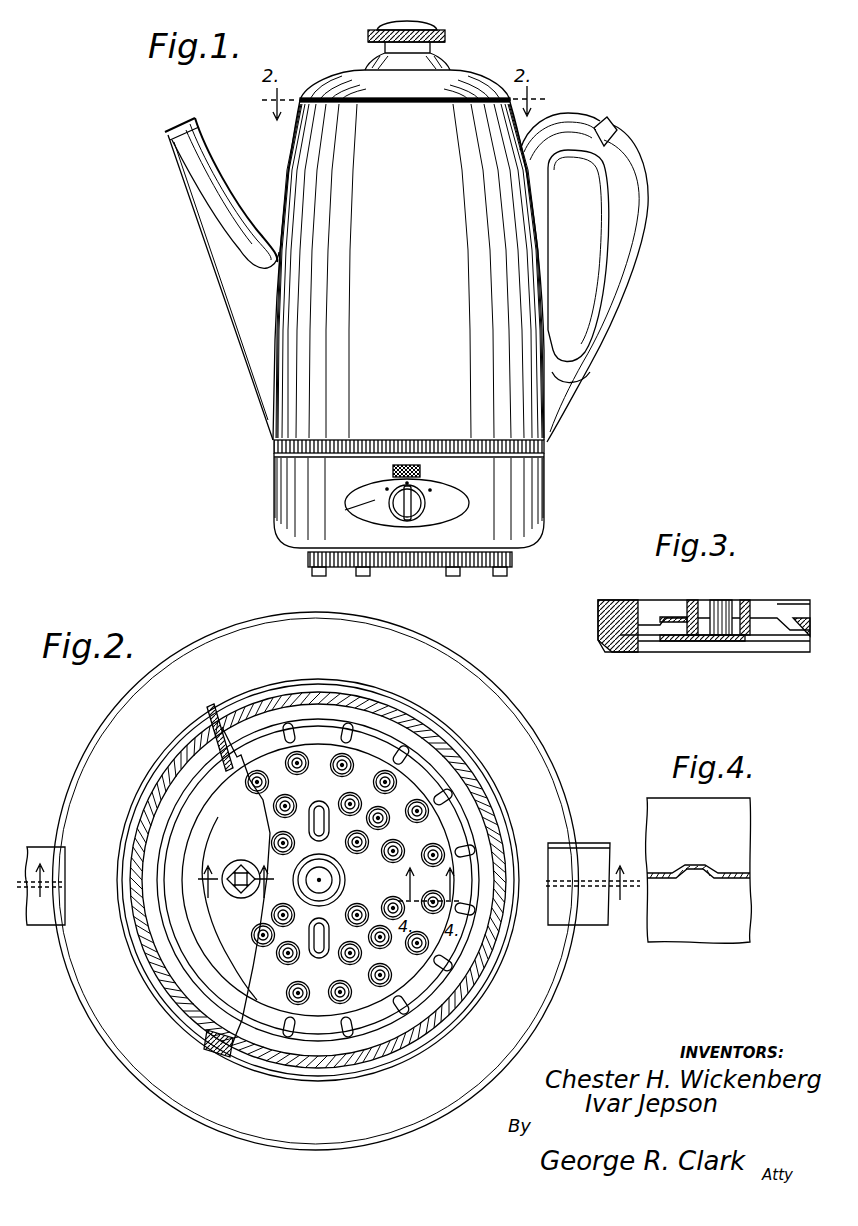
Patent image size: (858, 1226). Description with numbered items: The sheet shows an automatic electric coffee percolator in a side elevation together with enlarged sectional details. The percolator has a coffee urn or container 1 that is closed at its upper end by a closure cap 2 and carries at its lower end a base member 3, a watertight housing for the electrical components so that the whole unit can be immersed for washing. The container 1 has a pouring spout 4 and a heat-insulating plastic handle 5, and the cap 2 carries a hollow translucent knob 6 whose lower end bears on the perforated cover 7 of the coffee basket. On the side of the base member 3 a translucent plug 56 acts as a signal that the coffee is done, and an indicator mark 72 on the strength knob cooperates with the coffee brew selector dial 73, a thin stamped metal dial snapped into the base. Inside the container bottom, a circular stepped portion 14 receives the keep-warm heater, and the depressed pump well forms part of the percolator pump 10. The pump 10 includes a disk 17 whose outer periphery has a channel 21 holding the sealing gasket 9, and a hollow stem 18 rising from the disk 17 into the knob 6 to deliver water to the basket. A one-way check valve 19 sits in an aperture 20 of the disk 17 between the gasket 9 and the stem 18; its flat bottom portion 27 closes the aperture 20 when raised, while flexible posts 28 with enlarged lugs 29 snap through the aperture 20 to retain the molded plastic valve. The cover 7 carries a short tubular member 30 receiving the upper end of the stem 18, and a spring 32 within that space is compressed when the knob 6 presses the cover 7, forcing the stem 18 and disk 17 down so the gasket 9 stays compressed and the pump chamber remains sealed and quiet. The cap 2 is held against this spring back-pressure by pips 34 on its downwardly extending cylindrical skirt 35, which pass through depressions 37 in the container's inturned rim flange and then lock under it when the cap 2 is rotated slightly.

In FIG. 1, the container 1 is at (426, 224).
In FIG. 2, the container 1 is at (140, 1058).
In FIG. 1, the closure cap 2 is at (337, 82).
In FIG. 1, the base member 3 is at (290, 491).
In FIG. 2, the base member 3 is at (236, 892).
In FIG. 1, the pouring spout 4 is at (228, 246).
In FIG. 2, the pouring spout 4 is at (41, 872).
In FIG. 1, the handle 5 is at (630, 185).
In FIG. 2, the handle 5 is at (601, 843).
In FIG. 1, the knob 6 is at (440, 31).
In FIG. 2, the perforated cover 7 is at (313, 722).
In FIG. 4, the perforated cover 7 is at (732, 838).
In FIG. 3, the sealing gasket 9 is at (606, 645).
In FIG. 2, the percolator pump 10 is at (244, 946).
In FIG. 2, the second stepped portion 14 is at (166, 806).
In FIG. 3, the disk 17 is at (664, 652).
In FIG. 2, the stem 18 is at (316, 903).
In FIG. 2, the one-way check valve 19 is at (249, 853).
In FIG. 3, the one-way check valve 19 is at (728, 600).
In FIG. 2, the aperture 20 is at (246, 898).
In FIG. 3, the aperture 20 is at (753, 634).
In FIG. 3, the channel 21 is at (624, 602).
In FIG. 3, the flat bottom portion 27 is at (697, 642).
In FIG. 3, the posts 28 is at (738, 641).
In FIG. 3, the lugs 29 is at (687, 604).
In FIG. 2, the short tubular member 30 is at (340, 873).
In FIG. 2, the spring 32 is at (332, 879).
In FIG. 2, the pips 34 is at (418, 716).
In FIG. 2, the cylindrical skirt 35 is at (182, 758).
In FIG. 2, the depressions 37 is at (229, 714).
In FIG. 1, the translucent plug 56 is at (422, 470).
In FIG. 1, the indicator mark 72 is at (420, 503).
In FIG. 1, the coffee brew selector dial 73 is at (370, 505).